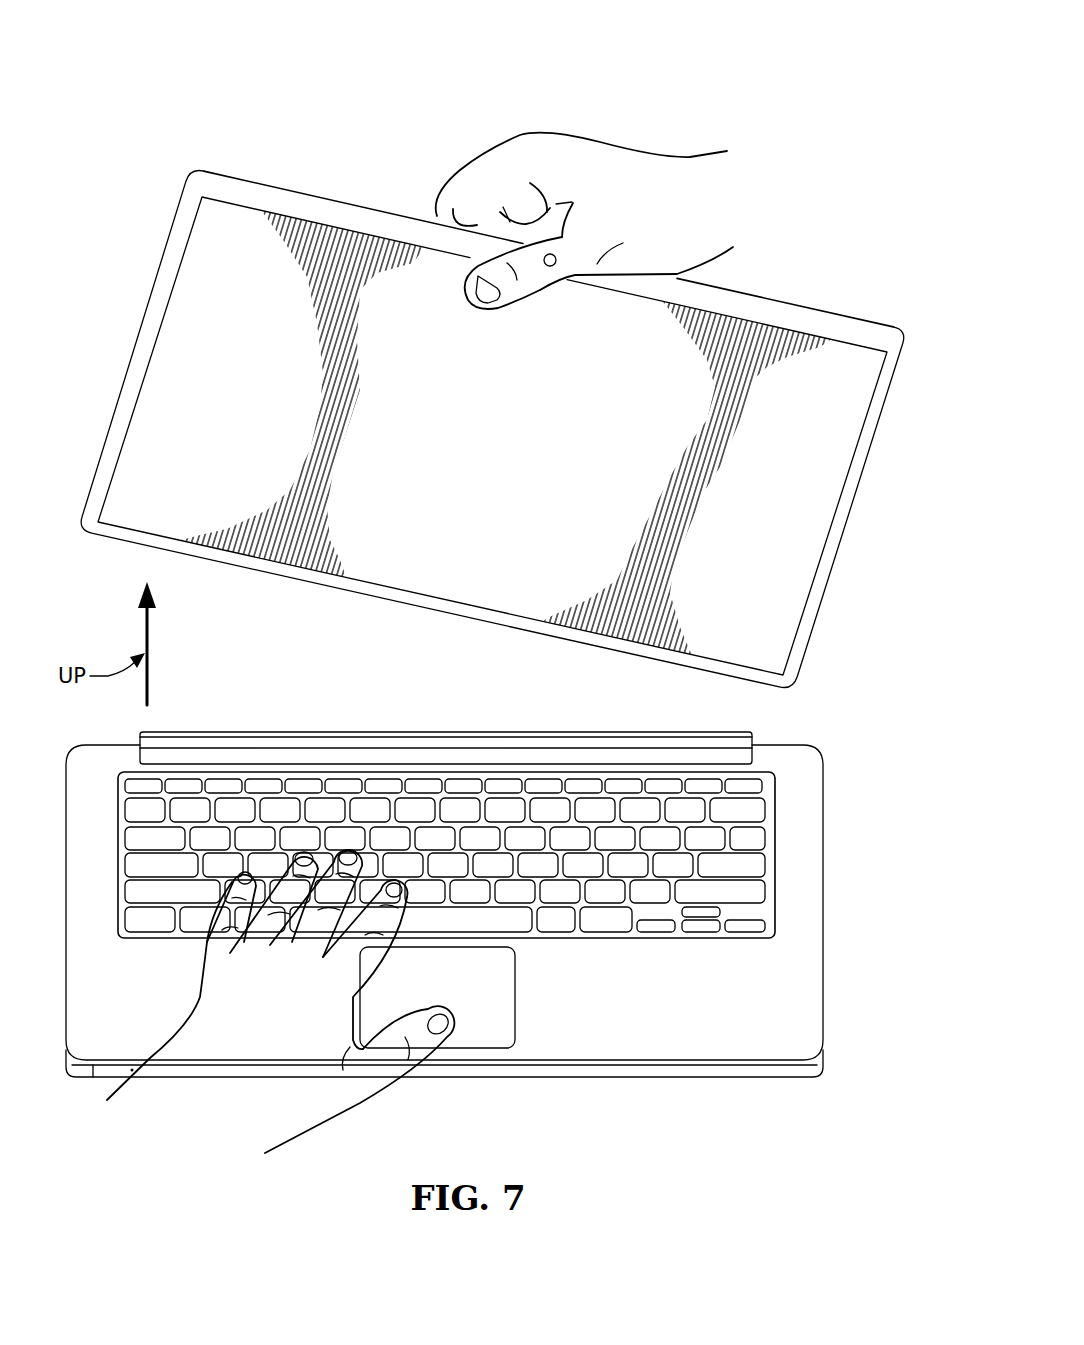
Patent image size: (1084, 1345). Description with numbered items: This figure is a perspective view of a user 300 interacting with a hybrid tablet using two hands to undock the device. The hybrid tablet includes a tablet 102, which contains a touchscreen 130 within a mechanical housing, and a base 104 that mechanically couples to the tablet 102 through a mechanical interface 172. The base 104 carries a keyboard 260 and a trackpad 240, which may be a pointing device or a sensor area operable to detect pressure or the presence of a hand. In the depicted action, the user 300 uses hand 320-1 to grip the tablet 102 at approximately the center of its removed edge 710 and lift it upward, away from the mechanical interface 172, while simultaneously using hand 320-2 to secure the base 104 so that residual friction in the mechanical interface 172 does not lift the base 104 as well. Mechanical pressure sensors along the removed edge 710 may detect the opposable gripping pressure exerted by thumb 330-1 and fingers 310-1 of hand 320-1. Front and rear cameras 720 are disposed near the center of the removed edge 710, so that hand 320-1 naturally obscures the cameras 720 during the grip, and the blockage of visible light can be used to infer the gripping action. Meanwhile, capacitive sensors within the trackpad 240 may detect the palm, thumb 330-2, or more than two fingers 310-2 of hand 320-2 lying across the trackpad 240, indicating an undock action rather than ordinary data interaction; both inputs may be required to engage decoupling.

The user 300 is at (538, 102).
The removed edge 710 is at (286, 186).
The fingers 310-1 is at (472, 170).
The hand 320-1 is at (613, 148).
The tablet 102 is at (170, 233).
The cameras 720 is at (558, 257).
The thumb 330-1 is at (522, 298).
The touchscreen 130 is at (468, 463).
The mechanical interface 172 is at (285, 733).
The keyboard 260 is at (775, 853).
The hand 320-2 is at (175, 1020).
The fingers 310-2 is at (375, 976).
The trackpad 240 is at (515, 1010).
The thumb 330-2 is at (390, 1085).
The base 104 is at (578, 1078).